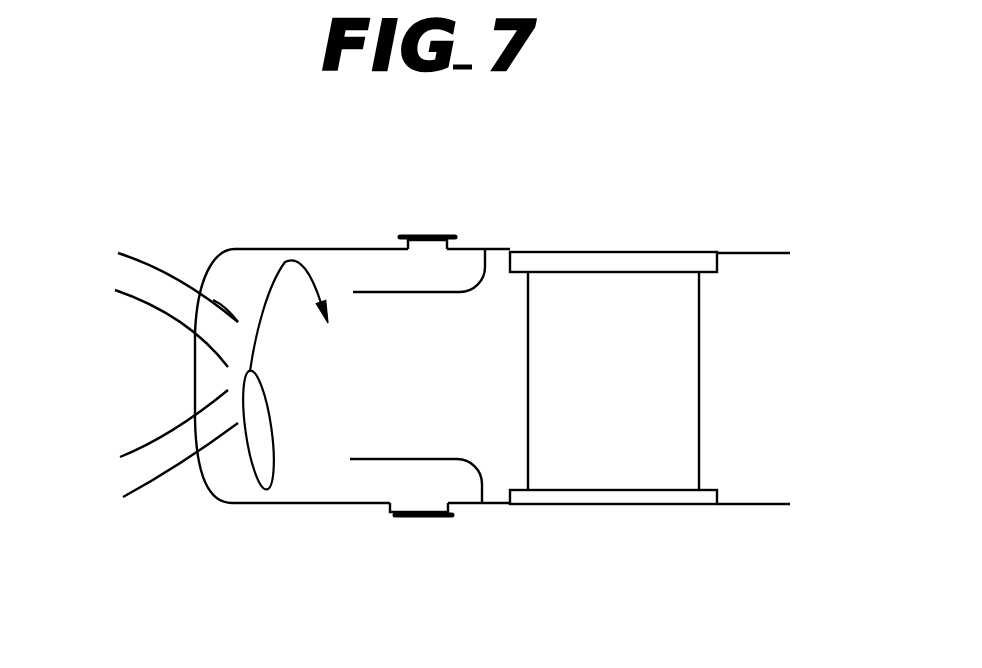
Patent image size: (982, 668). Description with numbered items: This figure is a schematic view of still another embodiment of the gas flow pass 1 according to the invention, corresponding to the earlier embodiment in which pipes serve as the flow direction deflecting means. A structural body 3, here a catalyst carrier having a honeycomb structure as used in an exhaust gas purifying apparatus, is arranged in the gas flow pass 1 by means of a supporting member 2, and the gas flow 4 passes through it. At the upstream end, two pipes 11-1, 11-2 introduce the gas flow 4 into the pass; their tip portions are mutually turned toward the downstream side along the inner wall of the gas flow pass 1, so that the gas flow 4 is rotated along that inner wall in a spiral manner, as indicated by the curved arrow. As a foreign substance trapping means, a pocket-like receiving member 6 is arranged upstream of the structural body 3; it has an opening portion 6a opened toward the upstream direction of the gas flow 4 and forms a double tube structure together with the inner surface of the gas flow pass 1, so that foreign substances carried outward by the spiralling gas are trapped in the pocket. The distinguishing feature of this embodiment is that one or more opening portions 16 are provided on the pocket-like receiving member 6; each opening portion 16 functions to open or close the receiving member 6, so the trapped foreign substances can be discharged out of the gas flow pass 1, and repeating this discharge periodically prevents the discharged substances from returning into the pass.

The gas flow pass 1 is at (540, 238).
The supporting member 2 is at (688, 258).
The structural body 3 is at (690, 382).
The gas flow 4 is at (279, 266).
The receiving member 6 is at (408, 460).
The opening portion 6a is at (352, 483).
The pipe 11-1 is at (158, 268).
The pipe 11-2 is at (150, 447).
The opening portion 16 is at (438, 234).